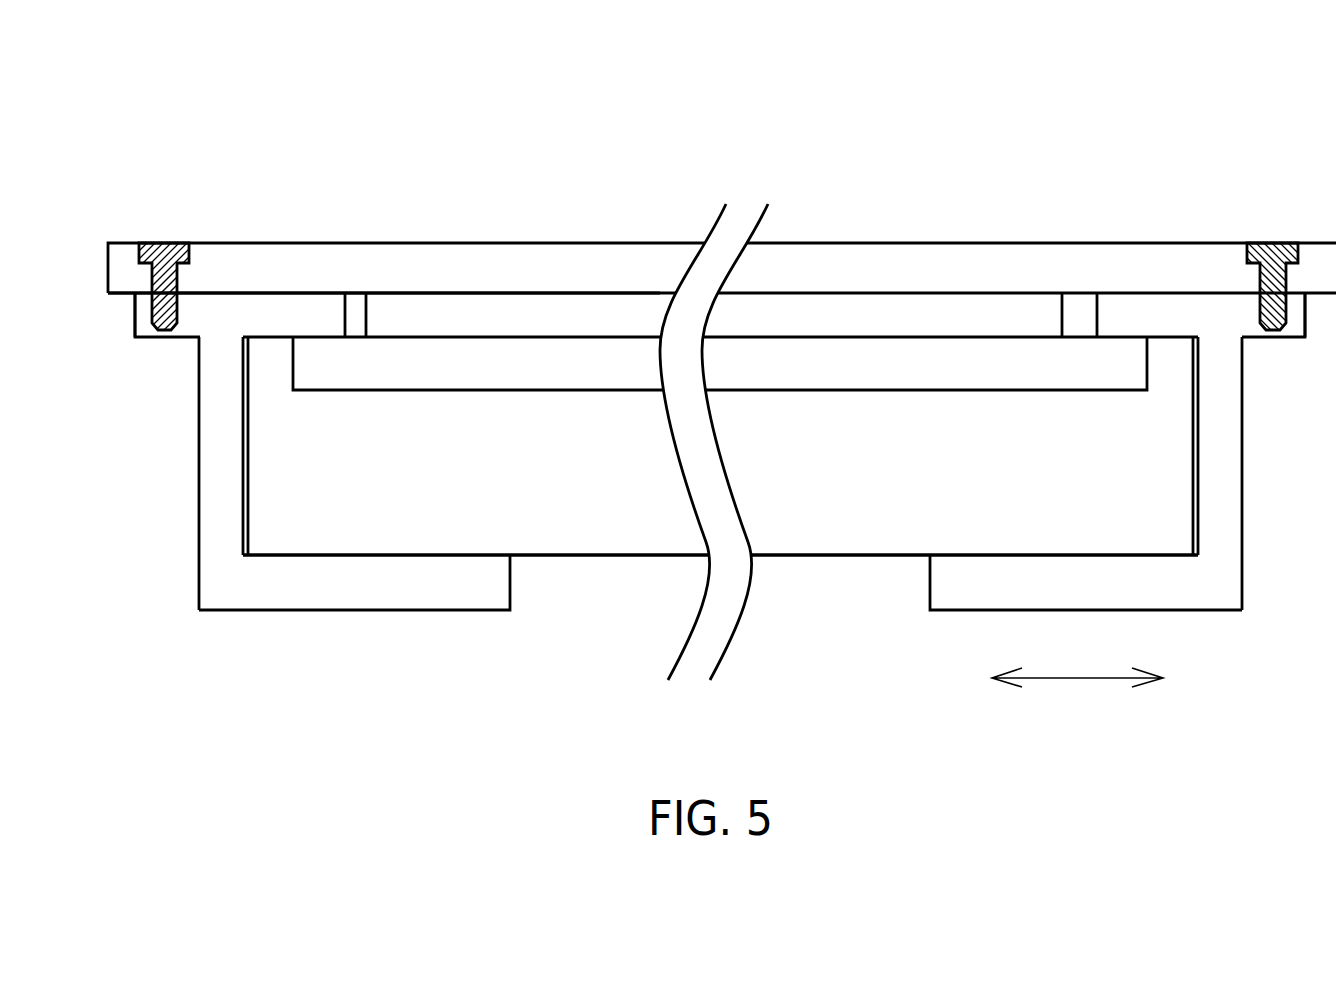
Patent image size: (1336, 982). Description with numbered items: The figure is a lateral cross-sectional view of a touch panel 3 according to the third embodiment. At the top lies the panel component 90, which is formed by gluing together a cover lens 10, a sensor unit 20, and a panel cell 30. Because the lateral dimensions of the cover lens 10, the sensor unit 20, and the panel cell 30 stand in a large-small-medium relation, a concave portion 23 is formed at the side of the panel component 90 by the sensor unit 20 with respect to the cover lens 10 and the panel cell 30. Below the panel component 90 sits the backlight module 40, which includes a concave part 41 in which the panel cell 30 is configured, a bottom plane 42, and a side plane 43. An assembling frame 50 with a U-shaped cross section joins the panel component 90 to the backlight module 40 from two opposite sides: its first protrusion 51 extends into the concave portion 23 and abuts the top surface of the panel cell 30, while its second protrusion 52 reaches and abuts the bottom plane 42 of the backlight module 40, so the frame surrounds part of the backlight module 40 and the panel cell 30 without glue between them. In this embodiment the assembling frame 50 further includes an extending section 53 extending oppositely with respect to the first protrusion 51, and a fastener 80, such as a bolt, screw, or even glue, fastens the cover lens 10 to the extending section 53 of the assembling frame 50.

The touch panel 3 is at (1160, 128).
The cover lens 10 is at (321, 268).
The sensor unit 20 is at (484, 325).
The concave portion 23 is at (356, 330).
The panel cell 30 is at (398, 365).
The backlight module 40 is at (278, 523).
The concave part 41 is at (478, 393).
The bottom plane 42 is at (604, 558).
The side plane 43 is at (248, 478).
The assembling frame 50 is at (160, 443).
The first protrusion 51 is at (285, 320).
The second protrusion 52 is at (465, 587).
The extending section 53 is at (145, 315).
The fastener 80 is at (162, 245).
The panel component 90 is at (517, 197).